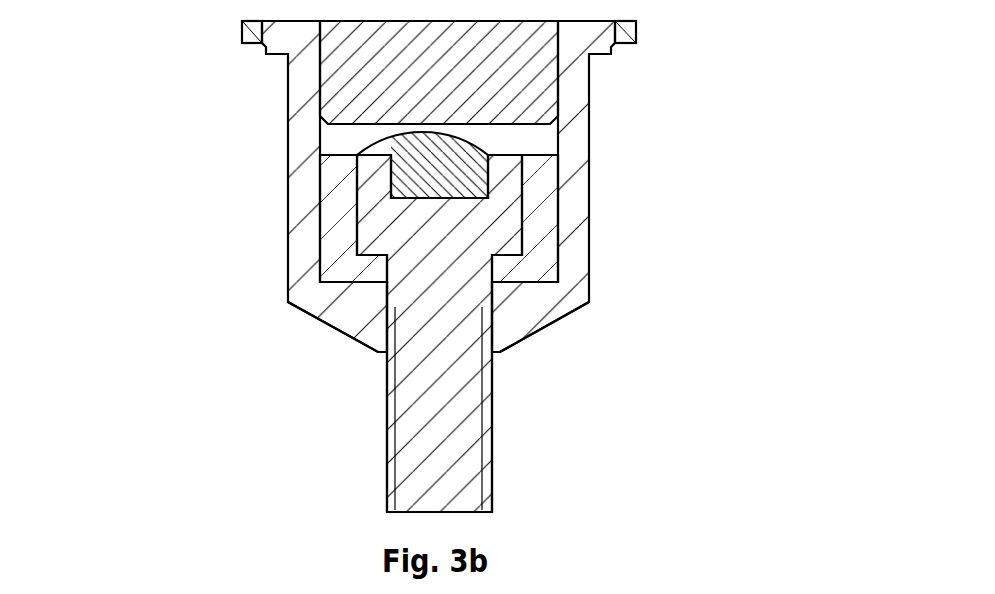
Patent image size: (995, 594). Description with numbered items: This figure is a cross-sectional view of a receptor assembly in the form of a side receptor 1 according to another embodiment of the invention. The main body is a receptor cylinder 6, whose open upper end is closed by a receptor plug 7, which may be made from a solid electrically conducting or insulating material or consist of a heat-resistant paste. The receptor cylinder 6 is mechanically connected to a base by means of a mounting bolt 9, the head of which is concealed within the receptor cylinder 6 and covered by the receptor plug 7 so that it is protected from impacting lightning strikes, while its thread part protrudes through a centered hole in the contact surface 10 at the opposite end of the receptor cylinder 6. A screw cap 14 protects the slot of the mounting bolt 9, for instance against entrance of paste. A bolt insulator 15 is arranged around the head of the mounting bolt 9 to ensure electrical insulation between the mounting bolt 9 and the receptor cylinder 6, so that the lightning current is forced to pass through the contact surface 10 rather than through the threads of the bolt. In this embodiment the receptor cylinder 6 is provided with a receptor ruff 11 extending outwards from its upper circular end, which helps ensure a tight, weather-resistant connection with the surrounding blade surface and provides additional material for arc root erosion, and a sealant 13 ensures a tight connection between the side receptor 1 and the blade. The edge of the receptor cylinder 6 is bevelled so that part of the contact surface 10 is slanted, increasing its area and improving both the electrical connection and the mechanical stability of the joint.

The side receptor 1 is at (712, 362).
The receptor cylinder 6 is at (310, 285).
The receptor plug 7 is at (350, 100).
The mounting bolt 9 is at (448, 365).
The contact surface 10 is at (342, 337).
The receptor ruff 11 is at (592, 55).
The sealant 13 is at (255, 37).
The screw cap 14 is at (473, 177).
The bolt insulator 15 is at (342, 199).